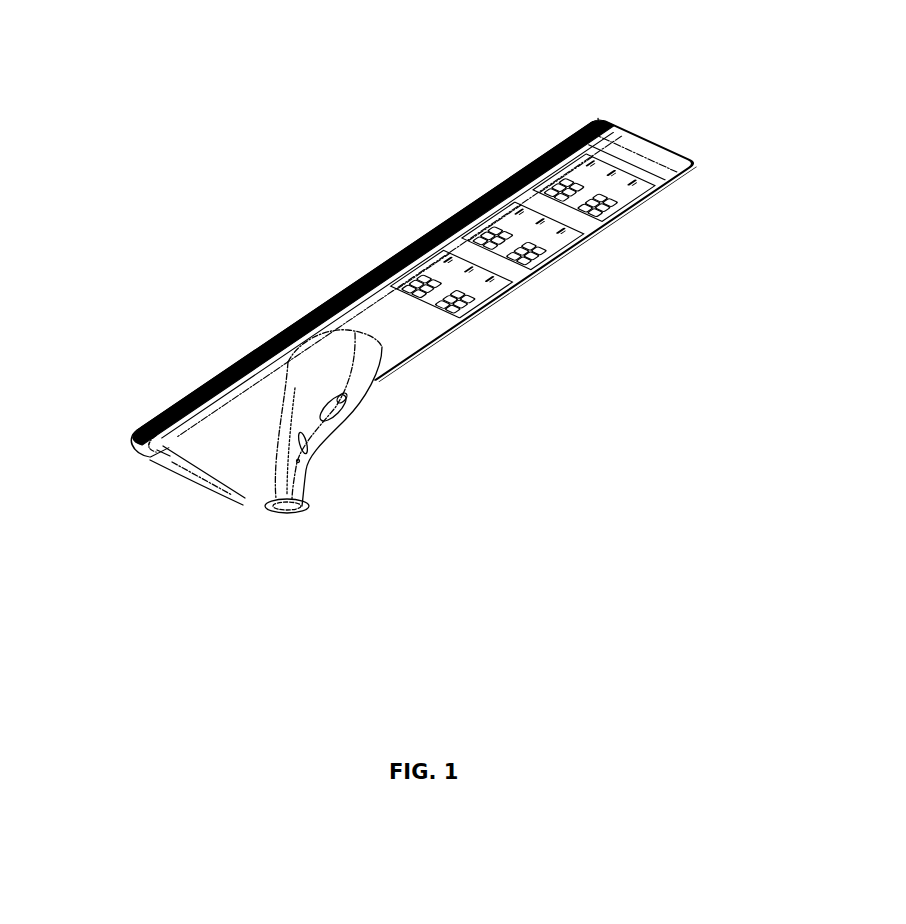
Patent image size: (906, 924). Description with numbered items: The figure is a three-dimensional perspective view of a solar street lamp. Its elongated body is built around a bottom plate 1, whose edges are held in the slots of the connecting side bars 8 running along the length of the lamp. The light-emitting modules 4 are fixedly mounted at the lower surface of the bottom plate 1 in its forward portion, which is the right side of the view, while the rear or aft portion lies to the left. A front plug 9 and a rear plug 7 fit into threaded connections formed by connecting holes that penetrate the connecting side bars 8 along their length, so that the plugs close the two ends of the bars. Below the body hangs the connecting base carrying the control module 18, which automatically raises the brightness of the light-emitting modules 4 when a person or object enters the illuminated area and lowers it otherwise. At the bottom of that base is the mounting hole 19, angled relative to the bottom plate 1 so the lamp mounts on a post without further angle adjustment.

The bottom plate 1 is at (410, 330).
The light-emitting modules 4 is at (603, 223).
The rear plug 7 is at (157, 463).
The connecting side bars 8 is at (403, 243).
The front plug 9 is at (643, 143).
The control module 18 is at (347, 423).
The mounting hole 19 is at (273, 517).